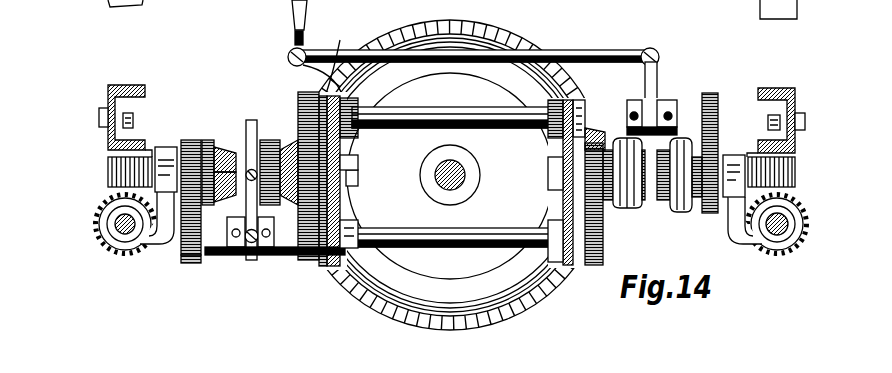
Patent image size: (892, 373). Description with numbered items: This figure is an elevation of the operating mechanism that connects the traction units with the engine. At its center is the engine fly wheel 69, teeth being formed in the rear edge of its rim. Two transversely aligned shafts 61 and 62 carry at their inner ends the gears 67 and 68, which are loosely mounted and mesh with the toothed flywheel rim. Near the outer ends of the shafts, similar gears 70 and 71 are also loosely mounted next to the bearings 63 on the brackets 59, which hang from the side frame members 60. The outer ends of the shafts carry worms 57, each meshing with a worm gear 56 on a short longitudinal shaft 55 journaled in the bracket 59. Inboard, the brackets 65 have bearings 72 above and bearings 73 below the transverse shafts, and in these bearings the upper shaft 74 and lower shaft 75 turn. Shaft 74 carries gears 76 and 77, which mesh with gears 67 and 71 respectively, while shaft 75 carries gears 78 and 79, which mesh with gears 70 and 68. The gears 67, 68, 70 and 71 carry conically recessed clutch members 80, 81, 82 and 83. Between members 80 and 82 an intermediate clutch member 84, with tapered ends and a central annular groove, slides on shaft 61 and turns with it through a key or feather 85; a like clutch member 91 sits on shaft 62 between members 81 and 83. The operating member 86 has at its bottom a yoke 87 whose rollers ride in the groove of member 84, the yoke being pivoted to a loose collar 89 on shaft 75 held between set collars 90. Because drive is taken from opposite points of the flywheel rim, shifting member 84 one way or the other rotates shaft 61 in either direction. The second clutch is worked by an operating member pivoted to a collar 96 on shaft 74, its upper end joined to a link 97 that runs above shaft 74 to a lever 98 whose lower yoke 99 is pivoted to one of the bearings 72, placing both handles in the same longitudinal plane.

The short longitudinal shaft 55 is at (113, 225).
The worm gear 56 is at (97, 217).
The worm 57 is at (108, 170).
The bracket 59 is at (168, 147).
The side frame member 60 is at (131, 85).
The transverse shaft 61 is at (212, 146).
The transverse shaft 62 is at (548, 175).
The bearing 63 is at (168, 147).
The bracket 65 is at (357, 160).
The gear 67 is at (307, 212).
The gear 68 is at (563, 206).
The engine fly wheel 69 is at (450, 175).
The gear 70 is at (183, 222).
The gear 71 is at (693, 208).
The bearing 72 is at (348, 138).
The bearing 73 is at (332, 270).
The shaft 74 is at (455, 114).
The shaft 75 is at (282, 252).
The gear 76 is at (297, 97).
The gear 77 is at (718, 100).
The gear 78 is at (185, 258).
The gear 79 is at (575, 265).
The clutch member 80 is at (298, 145).
The clutch member 81 is at (608, 208).
The clutch member 82 is at (228, 146).
The clutch member 83 is at (668, 205).
The intermediate clutch member 84 is at (239, 147).
The key or feather 85 is at (176, 200).
The operating member 86 is at (292, 58).
The yoke 87 is at (255, 162).
The loose collar 89 is at (251, 250).
The set collar 90 is at (233, 250).
The clutch member 91 is at (650, 202).
The collar 96 is at (655, 84).
The link 97 is at (606, 46).
The lever 98 is at (306, 10).
The yoke 99 is at (362, 98).